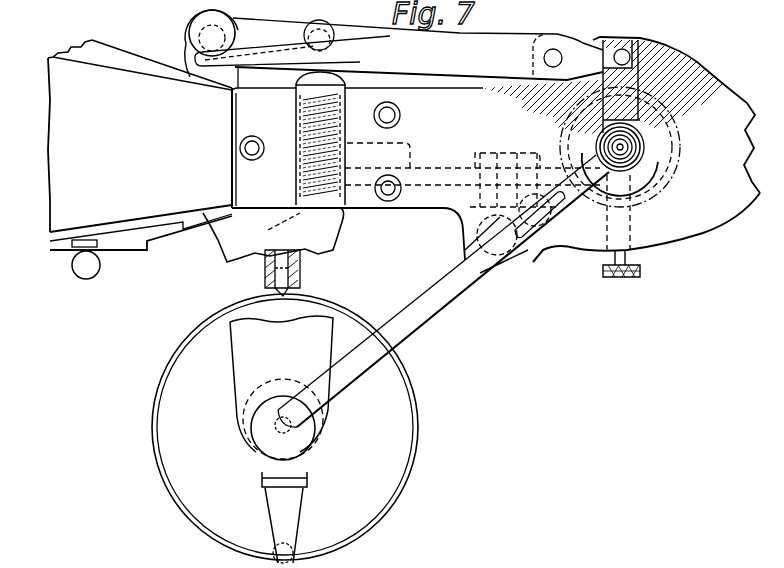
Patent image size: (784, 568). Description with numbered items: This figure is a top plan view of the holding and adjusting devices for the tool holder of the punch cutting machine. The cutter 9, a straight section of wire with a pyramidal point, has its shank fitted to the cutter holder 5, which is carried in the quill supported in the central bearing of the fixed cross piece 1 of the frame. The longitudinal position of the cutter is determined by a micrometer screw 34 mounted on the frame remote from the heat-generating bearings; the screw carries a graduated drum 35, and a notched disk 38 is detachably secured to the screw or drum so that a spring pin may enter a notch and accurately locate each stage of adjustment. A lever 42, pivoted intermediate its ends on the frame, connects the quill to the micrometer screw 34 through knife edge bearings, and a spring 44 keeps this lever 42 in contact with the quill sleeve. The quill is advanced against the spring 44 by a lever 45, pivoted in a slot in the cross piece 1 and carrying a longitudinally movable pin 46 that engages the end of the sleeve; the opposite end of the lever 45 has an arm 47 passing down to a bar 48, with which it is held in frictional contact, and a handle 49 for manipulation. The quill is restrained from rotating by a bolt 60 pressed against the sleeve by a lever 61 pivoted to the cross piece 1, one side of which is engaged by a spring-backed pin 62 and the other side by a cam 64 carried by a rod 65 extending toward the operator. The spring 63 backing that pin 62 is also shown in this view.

The fixed cross piece 1 is at (692, 215).
The cutter holder 5 is at (653, 163).
The cutter 9 is at (572, 168).
The micrometer screw 34 is at (280, 410).
The graduated drum 35 is at (395, 412).
The notched disk 38 is at (417, 442).
The lever 42 is at (428, 315).
The spring 44 is at (545, 250).
The lever 45 is at (432, 188).
The longitudinally movable pin 46 is at (640, 272).
The arm 47 is at (177, 238).
The bar 48 is at (133, 250).
The handle 49 is at (90, 277).
The bolt 60 is at (675, 55).
The lever 61 is at (418, 49).
The pin 62 is at (307, 80).
The spring 63 is at (333, 118).
The cam 64 is at (190, 42).
The rod 65 is at (190, 32).